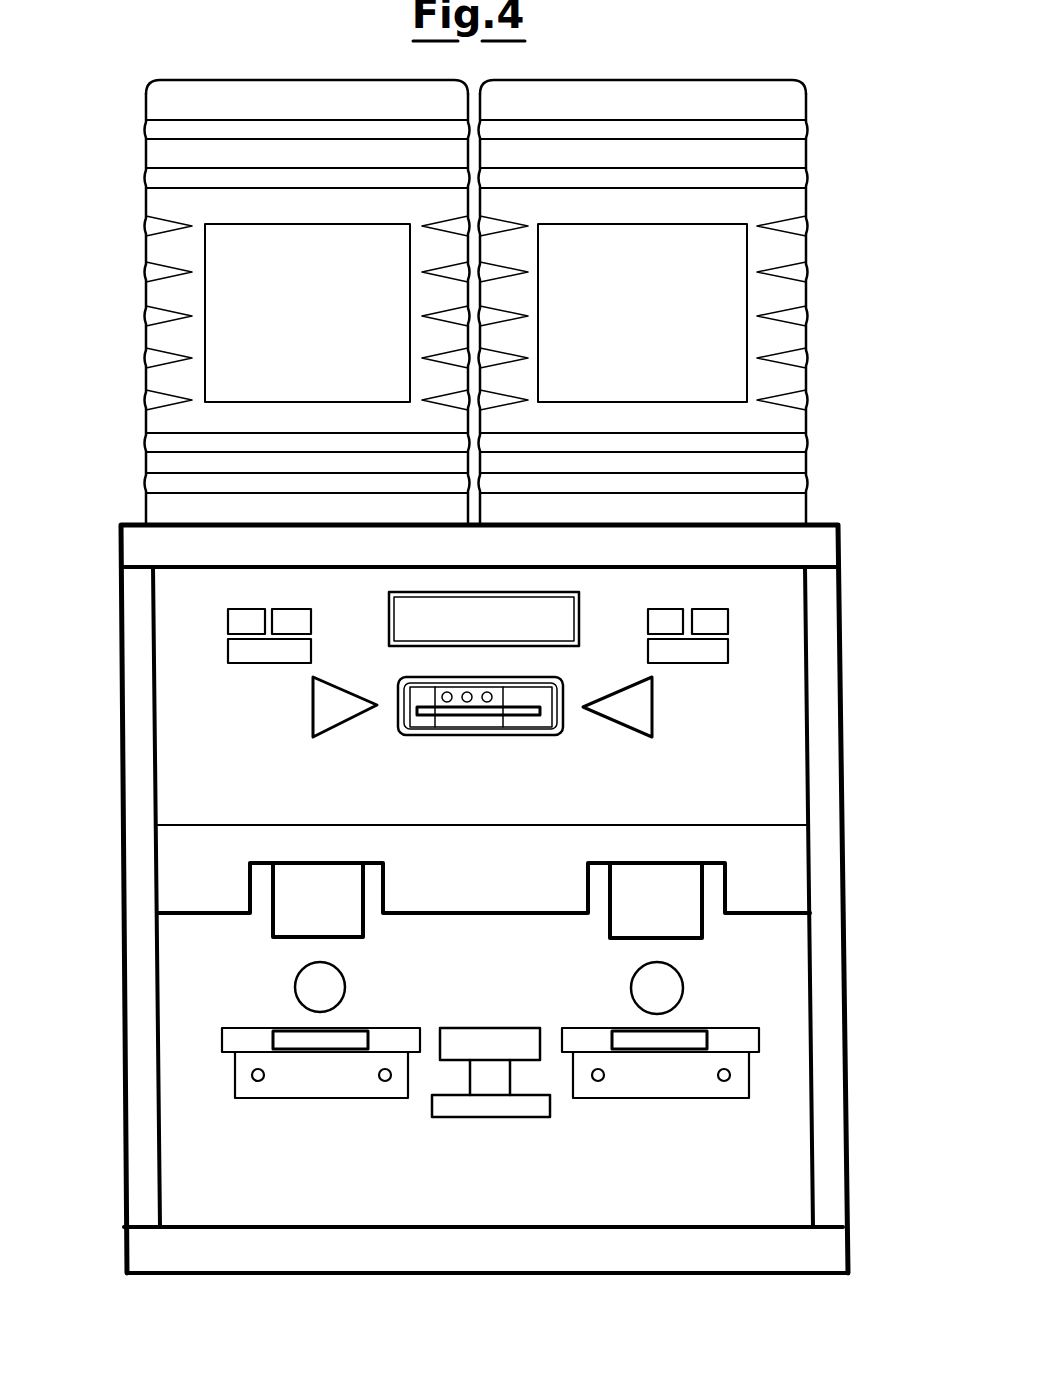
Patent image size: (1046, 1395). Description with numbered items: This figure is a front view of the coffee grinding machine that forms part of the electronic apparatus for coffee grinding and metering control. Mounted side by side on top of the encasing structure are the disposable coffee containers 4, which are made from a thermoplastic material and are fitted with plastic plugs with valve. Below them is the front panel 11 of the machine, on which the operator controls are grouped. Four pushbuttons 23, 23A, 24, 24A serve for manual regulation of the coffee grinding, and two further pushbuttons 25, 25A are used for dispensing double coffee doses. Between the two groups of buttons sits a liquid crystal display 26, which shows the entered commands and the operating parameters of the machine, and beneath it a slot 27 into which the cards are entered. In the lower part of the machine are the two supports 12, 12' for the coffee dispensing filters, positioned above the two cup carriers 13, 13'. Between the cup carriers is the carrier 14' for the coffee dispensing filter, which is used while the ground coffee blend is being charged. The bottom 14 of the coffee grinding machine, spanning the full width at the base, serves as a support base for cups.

The disposable coffee container 4 is at (255, 148).
The front panel 11 is at (178, 787).
The support for coffee dispensing filter 12 is at (327, 937).
The support for coffee dispensing filter 12' is at (673, 938).
The cup carrier 13 is at (315, 1038).
The cup carrier 13' is at (675, 1039).
The bottom 14 is at (486, 1274).
The carrier for coffee dispensing filter 14' is at (491, 1094).
The pushbutton 23 is at (245, 622).
The pushbutton 23A is at (290, 617).
The pushbutton 24 is at (668, 620).
The pushbutton 24A is at (713, 622).
The pushbutton 25 is at (247, 649).
The pushbutton 25A is at (707, 653).
The liquid crystal display 26 is at (515, 610).
The slot 27 is at (543, 720).